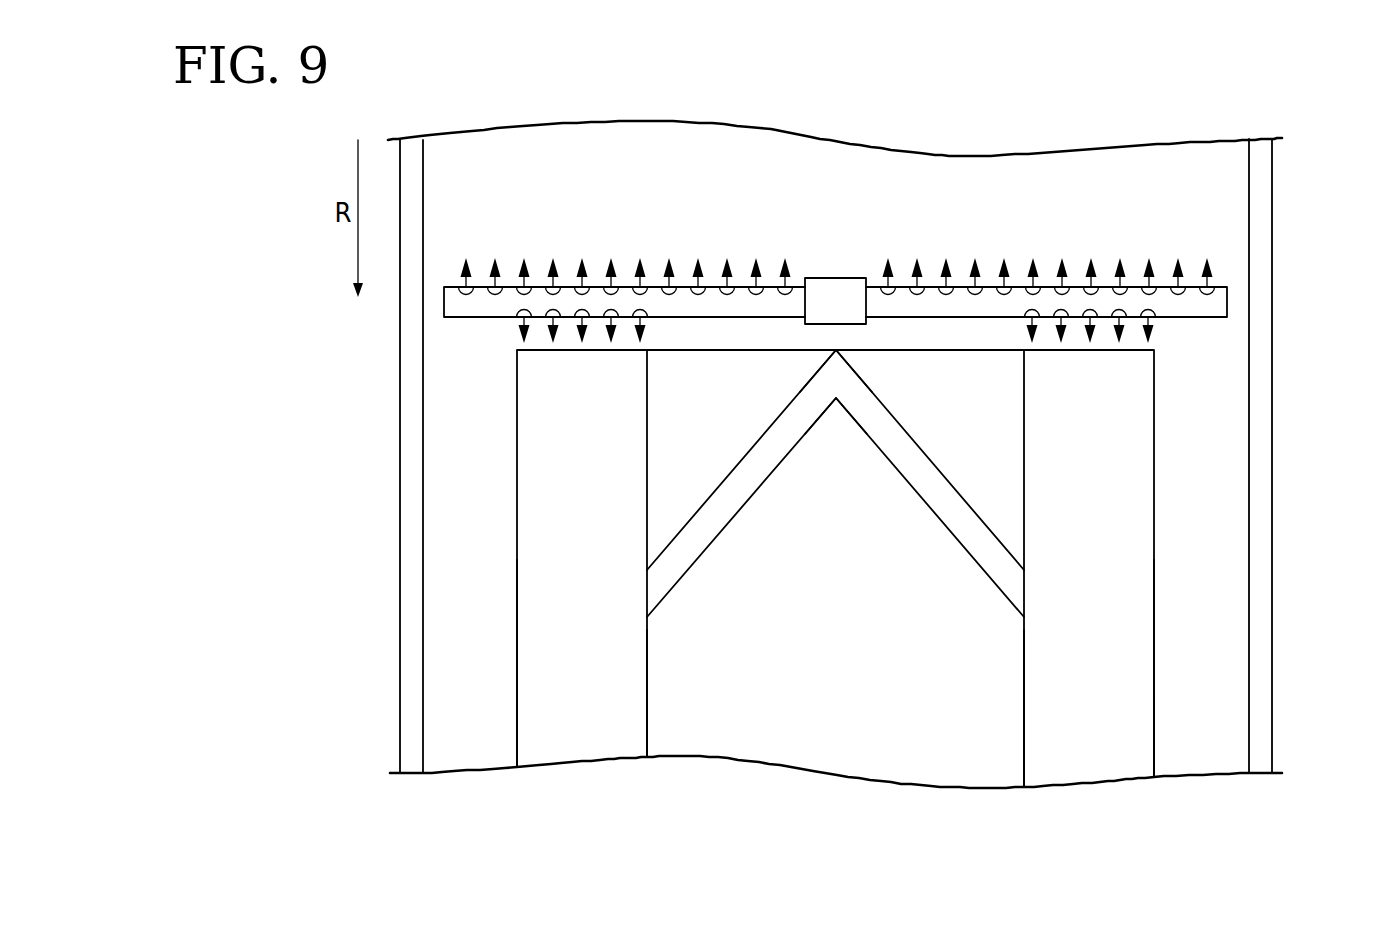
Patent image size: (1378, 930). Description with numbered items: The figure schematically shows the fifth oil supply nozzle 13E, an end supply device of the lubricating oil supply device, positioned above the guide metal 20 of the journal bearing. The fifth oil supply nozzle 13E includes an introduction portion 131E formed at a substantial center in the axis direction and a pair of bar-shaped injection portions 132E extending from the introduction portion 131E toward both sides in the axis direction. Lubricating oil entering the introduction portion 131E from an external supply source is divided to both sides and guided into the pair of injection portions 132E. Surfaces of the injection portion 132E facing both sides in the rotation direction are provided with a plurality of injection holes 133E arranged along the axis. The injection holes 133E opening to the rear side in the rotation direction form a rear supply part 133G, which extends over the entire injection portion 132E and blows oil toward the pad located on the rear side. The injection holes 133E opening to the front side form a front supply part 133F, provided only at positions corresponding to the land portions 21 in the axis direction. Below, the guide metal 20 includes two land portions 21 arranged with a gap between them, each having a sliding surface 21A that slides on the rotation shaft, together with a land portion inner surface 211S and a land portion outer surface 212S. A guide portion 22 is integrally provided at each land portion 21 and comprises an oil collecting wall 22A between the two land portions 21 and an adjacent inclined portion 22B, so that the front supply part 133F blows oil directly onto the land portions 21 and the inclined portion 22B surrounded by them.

The fifth oil supply nozzle 13E is at (837, 273).
The introduction portion 131E is at (834, 278).
The injection portion 132E is at (444, 300).
The injection holes 133E is at (835, 307).
The rear supply part 133G is at (1227, 252).
The front supply part 133F is at (1170, 355).
The guide metal 20 is at (1156, 433).
The land portion 21 is at (527, 434).
The sliding surface 21A is at (527, 688).
The land portion inner surface 211S is at (647, 688).
The land portion outer surface 212S is at (517, 603).
The guide portion 22 is at (681, 483).
The oil collecting wall 22A is at (730, 497).
The inclined portion 22B is at (835, 419).